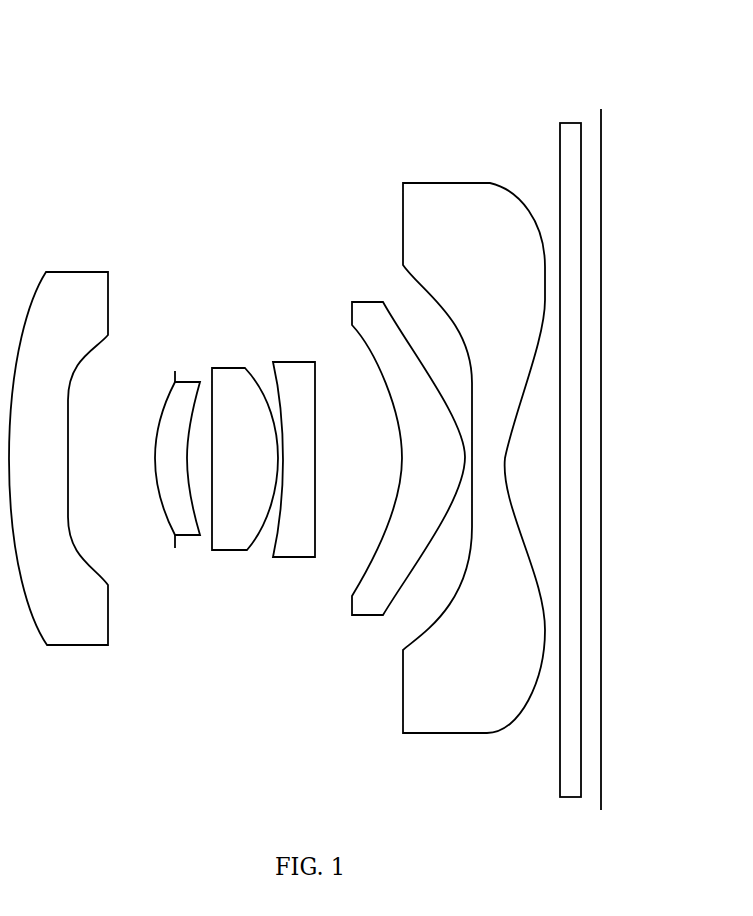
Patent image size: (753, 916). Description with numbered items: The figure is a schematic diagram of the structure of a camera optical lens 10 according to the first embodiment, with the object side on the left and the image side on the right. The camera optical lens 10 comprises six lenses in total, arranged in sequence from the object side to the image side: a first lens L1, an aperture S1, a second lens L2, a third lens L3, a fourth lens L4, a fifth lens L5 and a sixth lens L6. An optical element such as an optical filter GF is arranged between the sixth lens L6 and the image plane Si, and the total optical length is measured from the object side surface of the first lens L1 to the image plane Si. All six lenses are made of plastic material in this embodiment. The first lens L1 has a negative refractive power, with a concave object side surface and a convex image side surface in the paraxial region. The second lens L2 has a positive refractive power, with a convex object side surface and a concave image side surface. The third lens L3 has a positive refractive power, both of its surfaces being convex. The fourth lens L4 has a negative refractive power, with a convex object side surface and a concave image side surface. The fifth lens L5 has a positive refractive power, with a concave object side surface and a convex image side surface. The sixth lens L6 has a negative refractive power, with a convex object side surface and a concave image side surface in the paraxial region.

The camera optical lens 10 is at (326, 42).
The first lens L1 is at (58, 447).
The second lens L2 is at (177, 447).
The third lens L3 is at (245, 448).
The fourth lens L4 is at (294, 448).
The fifth lens L5 is at (408, 447).
The sixth lens L6 is at (474, 447).
The aperture S1 is at (178, 474).
The optical filter GF is at (569, 449).
The image plane Si is at (601, 448).